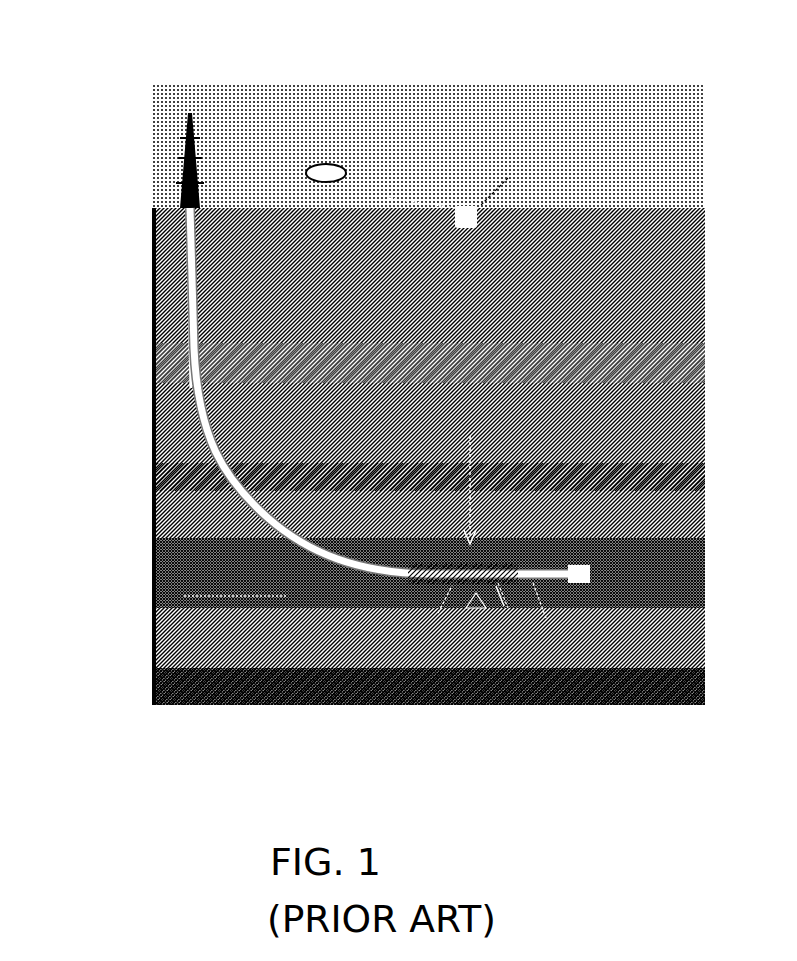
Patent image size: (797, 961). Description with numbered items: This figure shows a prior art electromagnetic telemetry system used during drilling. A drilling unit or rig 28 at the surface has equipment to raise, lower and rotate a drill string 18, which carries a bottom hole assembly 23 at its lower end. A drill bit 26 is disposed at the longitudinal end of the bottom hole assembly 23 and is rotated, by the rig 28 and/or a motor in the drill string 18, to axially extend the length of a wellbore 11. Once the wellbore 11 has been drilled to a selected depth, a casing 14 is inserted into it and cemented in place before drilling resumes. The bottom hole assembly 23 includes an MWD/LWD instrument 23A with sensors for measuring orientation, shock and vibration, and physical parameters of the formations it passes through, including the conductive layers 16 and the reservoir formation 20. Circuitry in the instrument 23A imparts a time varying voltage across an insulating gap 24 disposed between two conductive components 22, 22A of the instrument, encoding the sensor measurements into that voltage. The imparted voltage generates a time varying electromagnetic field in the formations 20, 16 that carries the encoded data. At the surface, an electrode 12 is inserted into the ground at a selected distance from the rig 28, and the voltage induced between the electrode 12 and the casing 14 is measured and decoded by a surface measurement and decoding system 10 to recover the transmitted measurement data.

The surface measurement and decoding system 10 is at (331, 158).
The wellbore 11 is at (145, 488).
The electrode 12 is at (504, 192).
The casing 14 is at (428, 298).
The conductive layers 16 is at (428, 463).
The drill string 18 is at (389, 391).
The reservoir formation 20 is at (428, 591).
The conductive component 22 is at (459, 622).
The conductive component 22A is at (548, 642).
The bottom hole assembly (BHA) 23 is at (456, 650).
The MWD/LWD instrument 23A is at (470, 476).
The insulating gap 24 is at (508, 631).
The drill bit 26 is at (428, 656).
The drilling unit (rig) 28 is at (213, 200).